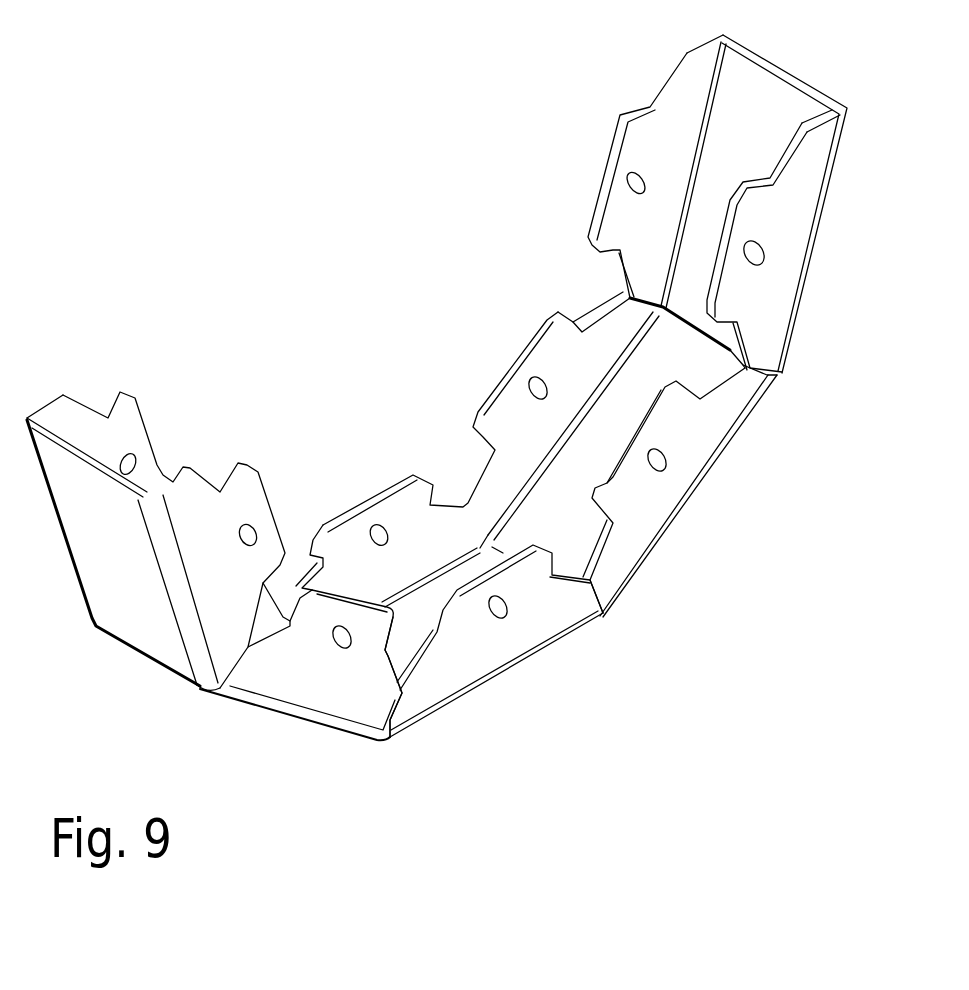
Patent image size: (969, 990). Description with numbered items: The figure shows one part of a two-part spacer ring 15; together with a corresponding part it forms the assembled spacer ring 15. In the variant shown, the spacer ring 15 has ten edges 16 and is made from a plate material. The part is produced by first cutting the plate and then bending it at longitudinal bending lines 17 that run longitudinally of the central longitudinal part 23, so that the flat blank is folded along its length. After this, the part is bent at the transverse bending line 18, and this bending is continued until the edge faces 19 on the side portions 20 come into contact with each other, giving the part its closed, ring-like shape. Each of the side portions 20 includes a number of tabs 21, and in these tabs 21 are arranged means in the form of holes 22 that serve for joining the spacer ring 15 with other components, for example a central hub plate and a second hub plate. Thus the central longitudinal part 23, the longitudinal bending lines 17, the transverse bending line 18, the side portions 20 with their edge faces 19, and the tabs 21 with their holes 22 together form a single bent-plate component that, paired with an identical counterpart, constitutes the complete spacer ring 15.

The spacer ring 15 is at (311, 247).
The edges 16 is at (121, 566).
The longitudinal bending lines 17 is at (297, 710).
The transverse bending line 18 is at (137, 655).
The edge faces 19 is at (400, 698).
The side portions 20 is at (238, 590).
The tabs 21 is at (613, 155).
The holes 22 is at (630, 183).
The central longitudinal part 23 is at (567, 523).